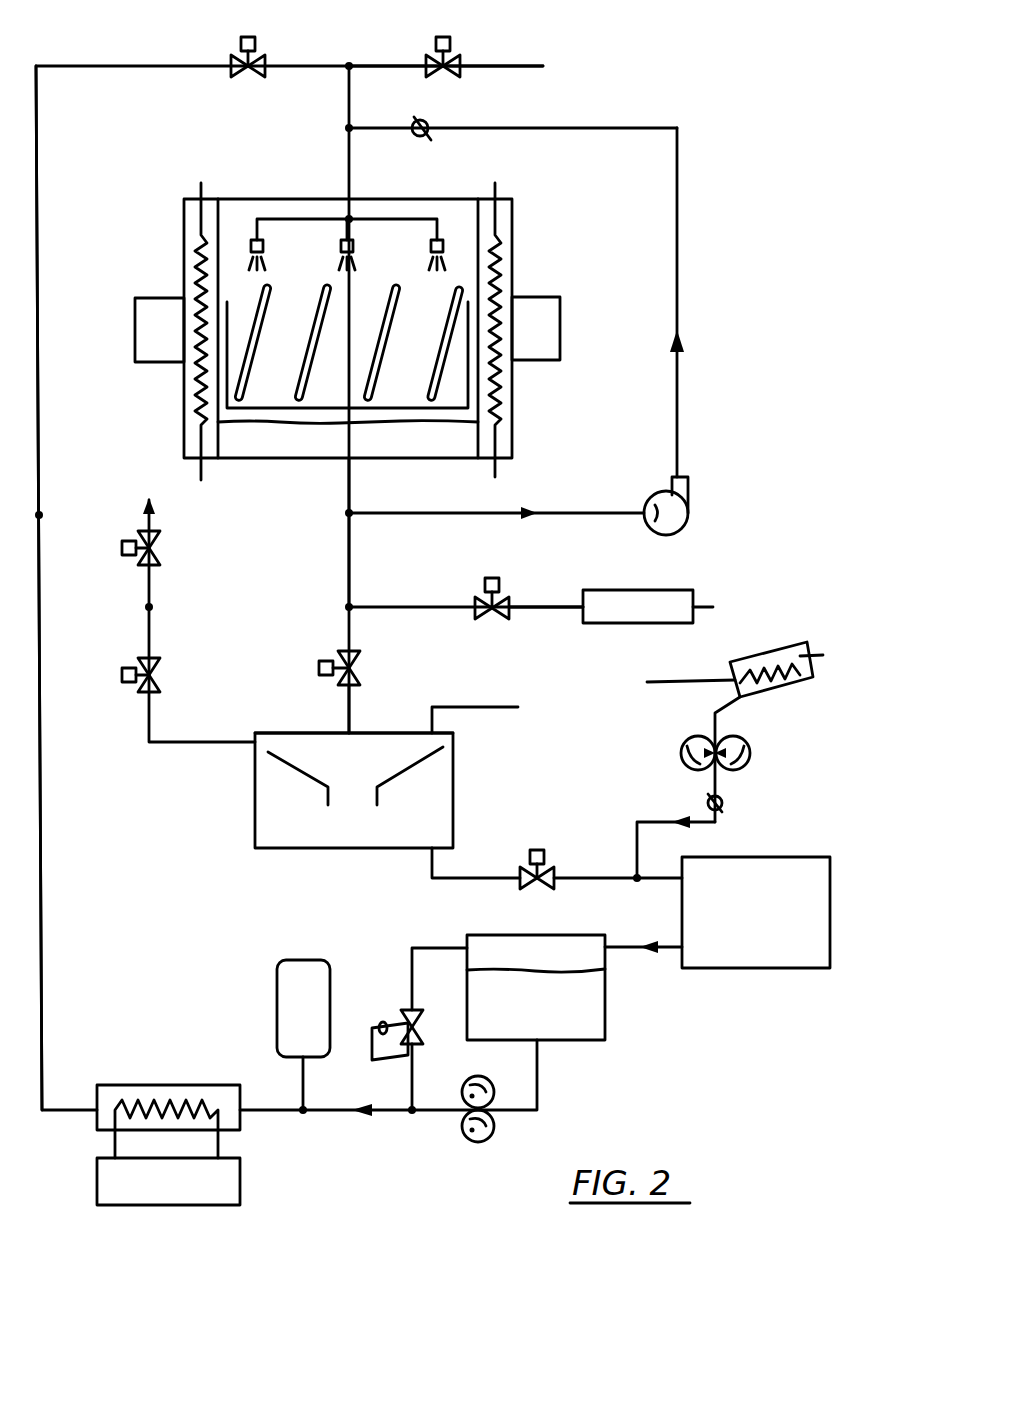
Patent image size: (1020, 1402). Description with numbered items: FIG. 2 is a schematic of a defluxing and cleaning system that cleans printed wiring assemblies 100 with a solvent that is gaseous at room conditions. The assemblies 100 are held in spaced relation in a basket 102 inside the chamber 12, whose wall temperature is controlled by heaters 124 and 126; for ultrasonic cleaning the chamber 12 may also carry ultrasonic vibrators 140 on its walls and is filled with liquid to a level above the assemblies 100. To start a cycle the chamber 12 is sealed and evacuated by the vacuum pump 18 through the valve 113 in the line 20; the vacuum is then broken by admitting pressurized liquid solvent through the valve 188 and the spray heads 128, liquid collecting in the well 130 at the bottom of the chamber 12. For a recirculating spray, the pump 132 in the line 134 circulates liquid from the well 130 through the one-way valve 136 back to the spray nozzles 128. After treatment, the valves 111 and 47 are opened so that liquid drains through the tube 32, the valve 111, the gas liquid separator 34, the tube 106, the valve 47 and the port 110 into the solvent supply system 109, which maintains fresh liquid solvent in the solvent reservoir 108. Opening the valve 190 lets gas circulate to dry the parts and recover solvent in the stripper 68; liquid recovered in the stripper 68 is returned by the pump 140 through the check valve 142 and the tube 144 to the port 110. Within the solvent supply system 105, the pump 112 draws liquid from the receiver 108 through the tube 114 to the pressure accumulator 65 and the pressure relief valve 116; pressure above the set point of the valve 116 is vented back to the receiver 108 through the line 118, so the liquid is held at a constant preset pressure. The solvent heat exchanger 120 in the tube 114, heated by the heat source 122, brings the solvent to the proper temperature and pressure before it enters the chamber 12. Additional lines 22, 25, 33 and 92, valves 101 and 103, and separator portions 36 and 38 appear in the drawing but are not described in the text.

The chamber 12 is at (290, 198).
The vacuum pump 18 is at (660, 566).
The line 20 is at (548, 610).
The conduit outlet 22 is at (713, 605).
The conduit 25 is at (483, 706).
The tube 32 is at (349, 543).
The conduit 33 is at (352, 700).
The gas liquid separator 34 is at (478, 768).
The still vessel 36 is at (255, 808).
The still top 38 is at (270, 732).
The valve 47 is at (545, 868).
The pressure accumulator 65 is at (305, 960).
The stripper 68 is at (772, 650).
The vent line 92 is at (543, 66).
The printed wiring assemblies 100 is at (378, 328).
The valve 101 is at (170, 680).
The basket 102 is at (272, 410).
The vent valve 103 is at (160, 542).
The solvent supply system 105 is at (695, 1062).
The tube 106 is at (490, 870).
The solvent reservoir 108 is at (605, 1012).
The solvent supply system 109 is at (785, 847).
The port 110 is at (655, 882).
The valve 111 is at (320, 664).
The pump 112 is at (498, 1128).
The valve 113 is at (484, 583).
The tube 114 is at (45, 957).
The pressure relief valve 116 is at (400, 1020).
The line 118 is at (440, 928).
The solvent heat exchanger 120 is at (158, 1085).
The heat source 122 is at (230, 1205).
The heater 124 is at (201, 238).
The heater 126 is at (512, 398).
The spray heads 128 is at (340, 247).
The well 130 is at (425, 452).
The pump 132 is at (688, 513).
The line 134 is at (677, 210).
The one-way valve 136 is at (430, 138).
The pump 140 is at (135, 300).
The check valve 142 is at (728, 807).
The tube 144 is at (670, 795).
The valve 188 is at (263, 50).
The valve 190 is at (458, 50).